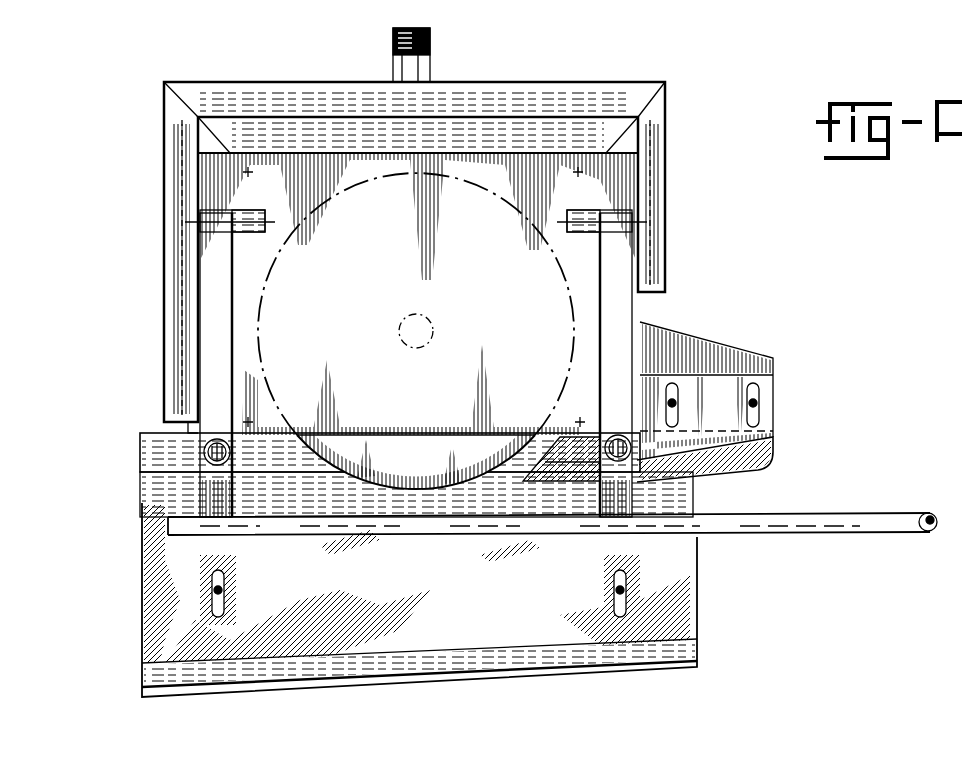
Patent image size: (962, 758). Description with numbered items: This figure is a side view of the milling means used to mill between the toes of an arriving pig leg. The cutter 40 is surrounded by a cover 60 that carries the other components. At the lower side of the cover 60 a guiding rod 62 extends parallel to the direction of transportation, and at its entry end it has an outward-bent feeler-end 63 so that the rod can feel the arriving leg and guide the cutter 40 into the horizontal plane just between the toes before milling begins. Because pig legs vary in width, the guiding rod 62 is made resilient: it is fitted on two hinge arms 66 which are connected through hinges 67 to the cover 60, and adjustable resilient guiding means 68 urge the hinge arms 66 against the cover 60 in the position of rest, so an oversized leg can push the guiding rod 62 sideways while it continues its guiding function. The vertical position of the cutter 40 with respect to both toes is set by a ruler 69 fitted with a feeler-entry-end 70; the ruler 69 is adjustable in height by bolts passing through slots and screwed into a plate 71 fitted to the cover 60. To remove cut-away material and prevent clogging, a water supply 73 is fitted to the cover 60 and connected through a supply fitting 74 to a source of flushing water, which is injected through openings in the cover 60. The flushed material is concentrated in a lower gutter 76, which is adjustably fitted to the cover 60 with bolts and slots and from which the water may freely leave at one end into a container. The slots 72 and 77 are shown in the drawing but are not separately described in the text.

The cutter 40 is at (422, 480).
The cover 60 is at (548, 125).
The guiding rod 62 is at (762, 528).
The feeler-end 63 is at (926, 532).
The hinge arms 66 is at (215, 492).
The hinges 67 is at (245, 246).
The adjustable resilient guiding means 68 is at (204, 452).
The ruler 69 is at (562, 468).
The feeler-entry-end 70 is at (770, 458).
The plate 71 is at (700, 350).
The bracket slot 72 is at (760, 400).
The water supply 73 is at (248, 100).
The supply fitting 74 is at (430, 60).
The gutter 76 is at (700, 655).
The mounting slot 77 is at (228, 605).